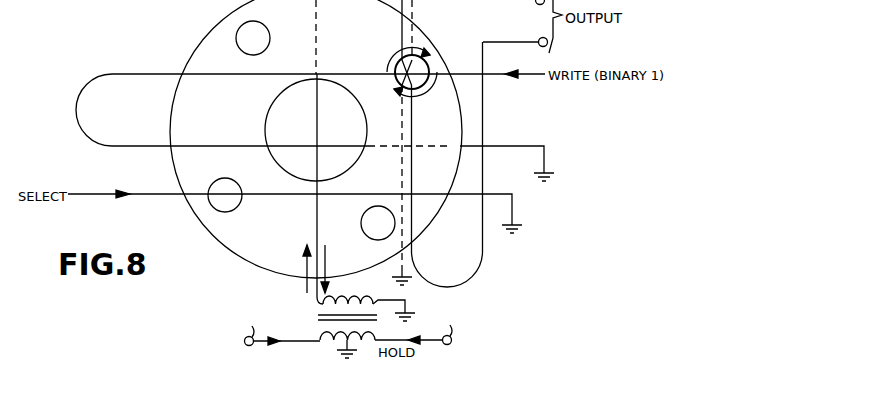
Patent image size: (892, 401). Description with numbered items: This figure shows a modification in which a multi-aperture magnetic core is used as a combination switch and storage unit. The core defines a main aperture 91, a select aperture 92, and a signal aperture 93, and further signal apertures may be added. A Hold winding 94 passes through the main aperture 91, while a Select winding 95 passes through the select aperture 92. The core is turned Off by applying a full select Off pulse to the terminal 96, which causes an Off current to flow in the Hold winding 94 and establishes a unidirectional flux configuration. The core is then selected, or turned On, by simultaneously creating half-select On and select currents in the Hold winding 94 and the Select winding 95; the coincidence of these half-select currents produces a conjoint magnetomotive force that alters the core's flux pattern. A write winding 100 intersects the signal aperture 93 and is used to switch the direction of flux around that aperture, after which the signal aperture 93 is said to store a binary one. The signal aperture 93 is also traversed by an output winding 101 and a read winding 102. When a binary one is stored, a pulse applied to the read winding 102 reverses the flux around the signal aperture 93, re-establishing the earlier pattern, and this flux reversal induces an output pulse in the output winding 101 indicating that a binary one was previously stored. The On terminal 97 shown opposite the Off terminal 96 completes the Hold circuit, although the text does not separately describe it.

The main aperture 91 is at (368, 128).
The select aperture 92 is at (233, 212).
The signal aperture 93 is at (432, 68).
The Hold winding 94 is at (318, 232).
The Select winding 95 is at (360, 194).
The terminal 96 is at (462, 331).
The on terminal 97 is at (252, 332).
The write winding 100 is at (137, 76).
The output winding 101 is at (414, 117).
The read winding 102 is at (400, 27).